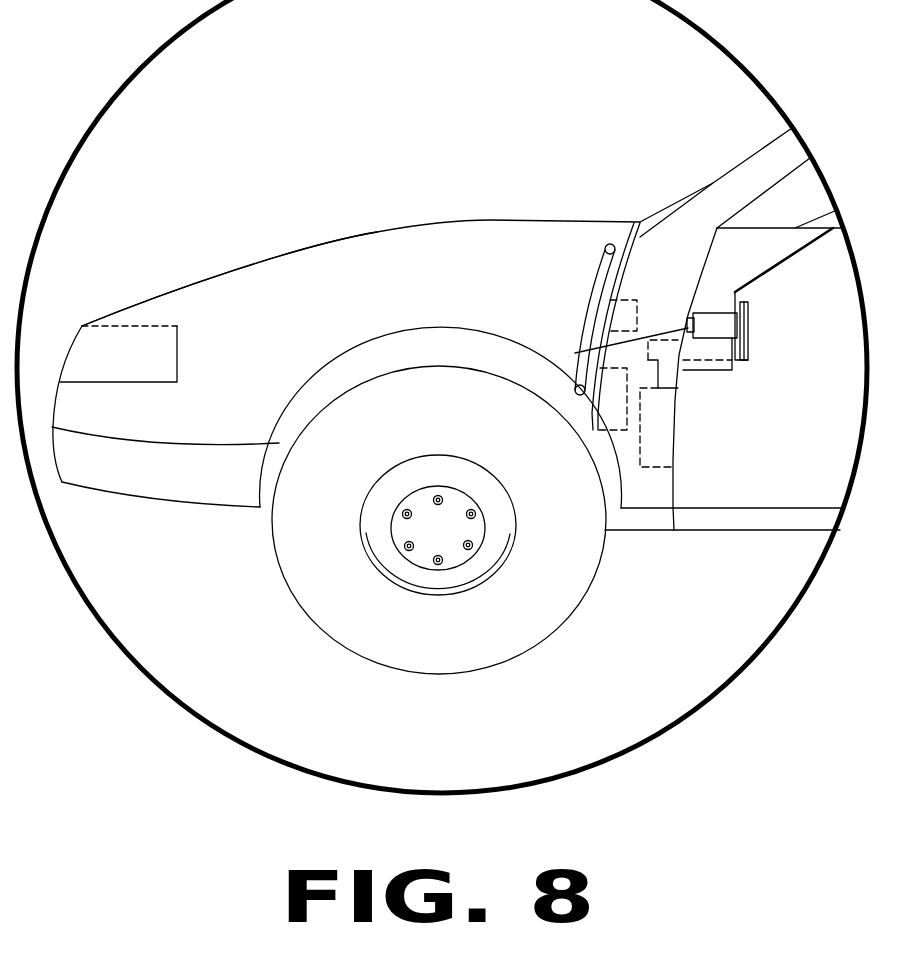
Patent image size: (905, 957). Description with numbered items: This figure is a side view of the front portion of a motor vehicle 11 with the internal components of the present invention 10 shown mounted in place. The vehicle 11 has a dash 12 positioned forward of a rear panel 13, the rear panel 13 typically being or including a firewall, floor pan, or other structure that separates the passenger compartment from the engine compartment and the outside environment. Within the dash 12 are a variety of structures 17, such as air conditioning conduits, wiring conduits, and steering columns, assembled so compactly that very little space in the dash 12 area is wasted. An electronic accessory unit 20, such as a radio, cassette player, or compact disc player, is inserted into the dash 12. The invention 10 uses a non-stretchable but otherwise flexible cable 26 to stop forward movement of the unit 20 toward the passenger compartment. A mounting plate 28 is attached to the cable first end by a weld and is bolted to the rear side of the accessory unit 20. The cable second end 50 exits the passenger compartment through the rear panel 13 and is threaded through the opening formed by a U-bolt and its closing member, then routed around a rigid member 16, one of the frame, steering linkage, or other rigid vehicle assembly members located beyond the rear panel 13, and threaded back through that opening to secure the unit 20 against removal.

The present invention 10 is at (688, 323).
The motor vehicle 11 is at (675, 530).
The dash 12 is at (760, 257).
The rear panel 13 is at (708, 183).
The rigid member 16 is at (583, 330).
The structures 17 is at (614, 422).
The electronic accessory unit 20 is at (718, 325).
The cable 26 is at (636, 287).
The mounting plate 28 is at (627, 253).
The cable second end 50 is at (580, 354).